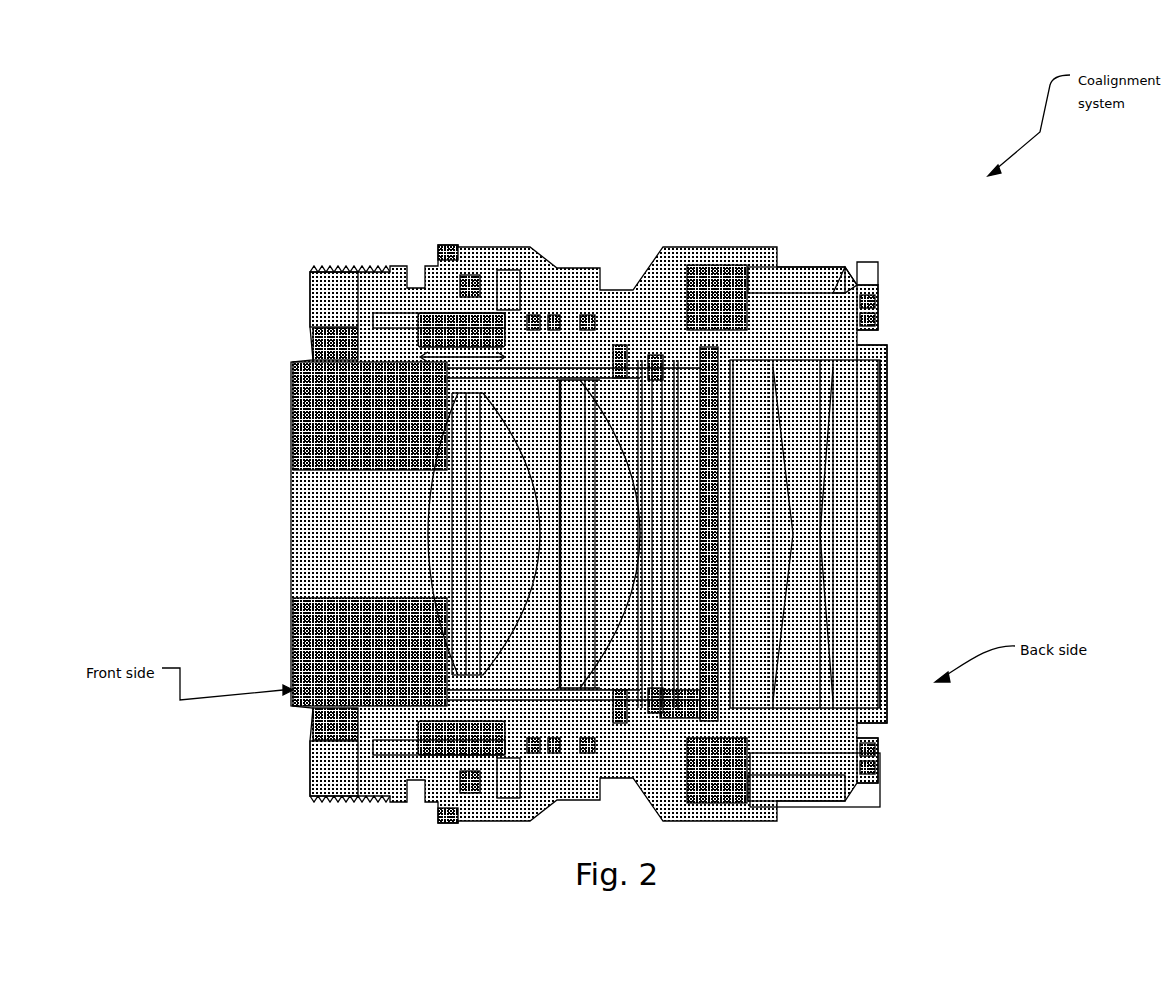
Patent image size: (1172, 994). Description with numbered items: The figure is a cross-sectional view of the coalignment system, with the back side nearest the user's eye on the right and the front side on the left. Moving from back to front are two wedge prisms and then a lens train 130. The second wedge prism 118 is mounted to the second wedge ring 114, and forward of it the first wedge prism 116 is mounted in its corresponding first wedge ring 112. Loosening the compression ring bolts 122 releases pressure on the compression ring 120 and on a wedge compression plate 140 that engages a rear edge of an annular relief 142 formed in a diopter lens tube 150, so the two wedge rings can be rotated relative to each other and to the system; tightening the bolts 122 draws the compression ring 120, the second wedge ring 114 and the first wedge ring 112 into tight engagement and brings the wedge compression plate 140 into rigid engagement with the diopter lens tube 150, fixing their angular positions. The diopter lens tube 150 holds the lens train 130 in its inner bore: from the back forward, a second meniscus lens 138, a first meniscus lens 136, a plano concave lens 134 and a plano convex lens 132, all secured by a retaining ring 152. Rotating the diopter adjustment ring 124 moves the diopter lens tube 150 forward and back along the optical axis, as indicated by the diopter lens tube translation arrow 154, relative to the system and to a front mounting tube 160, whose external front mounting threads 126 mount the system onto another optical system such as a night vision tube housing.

The first wedge ring 112 is at (817, 265).
The second wedge ring 114 is at (887, 350).
The first wedge prism 116 is at (793, 633).
The second wedge prism 118 is at (870, 527).
The compression ring 120 is at (858, 264).
The compression ring bolts 122 is at (880, 298).
The diopter adjustment ring 124 is at (580, 270).
The external front mounting threads 126 is at (342, 268).
The lens train 130 is at (567, 715).
The plano convex lens 132 is at (438, 445).
The plano concave lens 134 is at (527, 477).
The first meniscus lens 136 is at (557, 595).
The second meniscus lens 138 is at (630, 633).
The wedge compression plate 140 is at (762, 282).
The annular relief 142 is at (760, 745).
The diopter lens tube 150 is at (383, 725).
The retaining ring 152 is at (677, 700).
The diopter lens tube translation arrow 154 is at (462, 357).
The front mounting tube 160 is at (310, 298).